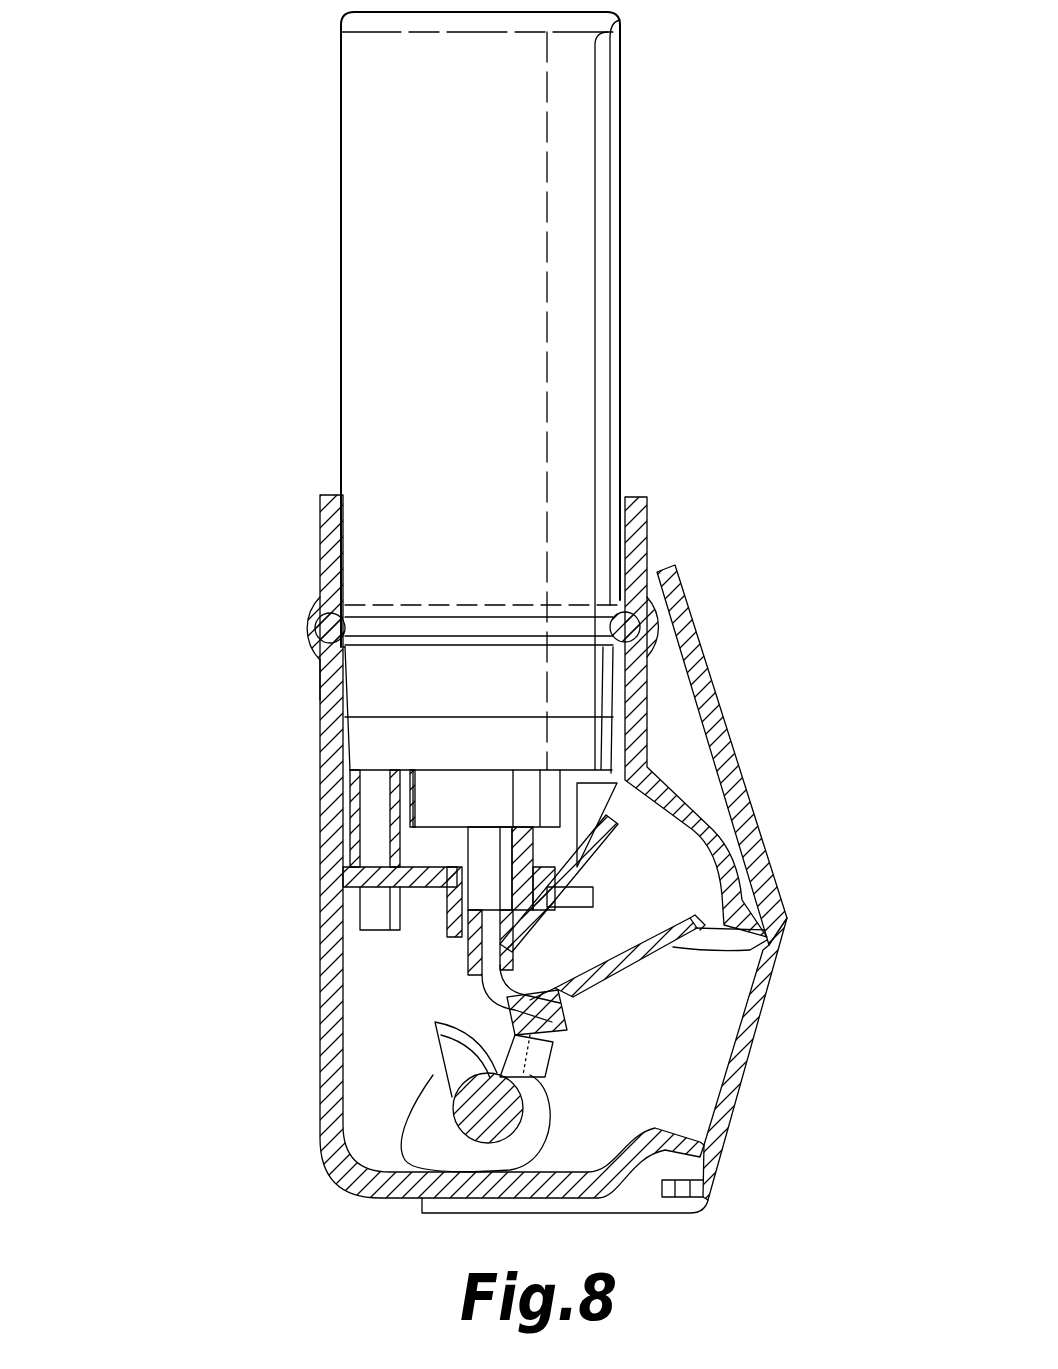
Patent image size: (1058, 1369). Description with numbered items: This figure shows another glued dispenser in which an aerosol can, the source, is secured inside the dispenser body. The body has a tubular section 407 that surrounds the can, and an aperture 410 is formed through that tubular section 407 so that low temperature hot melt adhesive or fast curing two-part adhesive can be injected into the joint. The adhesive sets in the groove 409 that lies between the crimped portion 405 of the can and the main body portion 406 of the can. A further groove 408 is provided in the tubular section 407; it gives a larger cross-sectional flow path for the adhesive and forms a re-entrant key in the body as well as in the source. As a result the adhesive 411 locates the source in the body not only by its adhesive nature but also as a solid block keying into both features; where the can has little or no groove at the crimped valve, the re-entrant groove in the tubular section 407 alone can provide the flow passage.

The crimped portion 405 is at (573, 699).
The main body portion 406 is at (475, 435).
The tubular section 407 is at (333, 688).
The further groove 408 is at (614, 614).
The groove 409 is at (418, 628).
The aperture 410 is at (307, 630).
The adhesive 411 is at (327, 656).